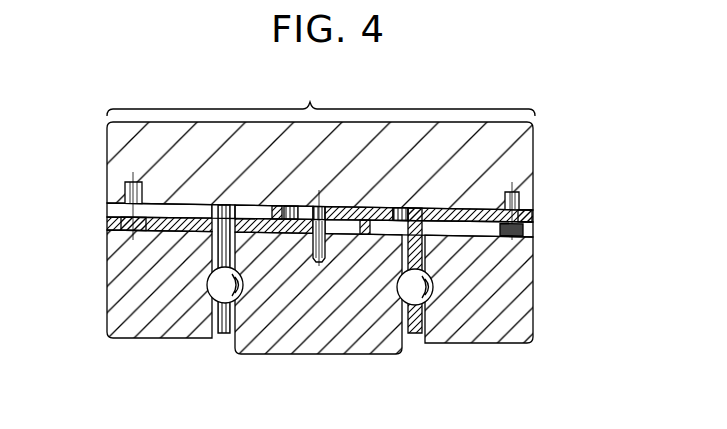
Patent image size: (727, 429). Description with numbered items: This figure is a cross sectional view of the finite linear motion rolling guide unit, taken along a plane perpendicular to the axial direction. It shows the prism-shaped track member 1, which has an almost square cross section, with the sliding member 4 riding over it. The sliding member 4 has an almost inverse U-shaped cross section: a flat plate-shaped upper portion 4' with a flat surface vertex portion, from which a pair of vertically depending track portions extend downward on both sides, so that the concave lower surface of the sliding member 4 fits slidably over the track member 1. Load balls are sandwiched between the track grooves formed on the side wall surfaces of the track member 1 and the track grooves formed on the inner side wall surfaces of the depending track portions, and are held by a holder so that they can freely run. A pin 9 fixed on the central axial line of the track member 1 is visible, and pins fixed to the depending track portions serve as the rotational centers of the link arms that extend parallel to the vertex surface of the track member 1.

The track member 1 is at (328, 354).
The sliding member 4 is at (321, 97).
The upper portion 4' is at (344, 166).
The pin 9 is at (322, 205).